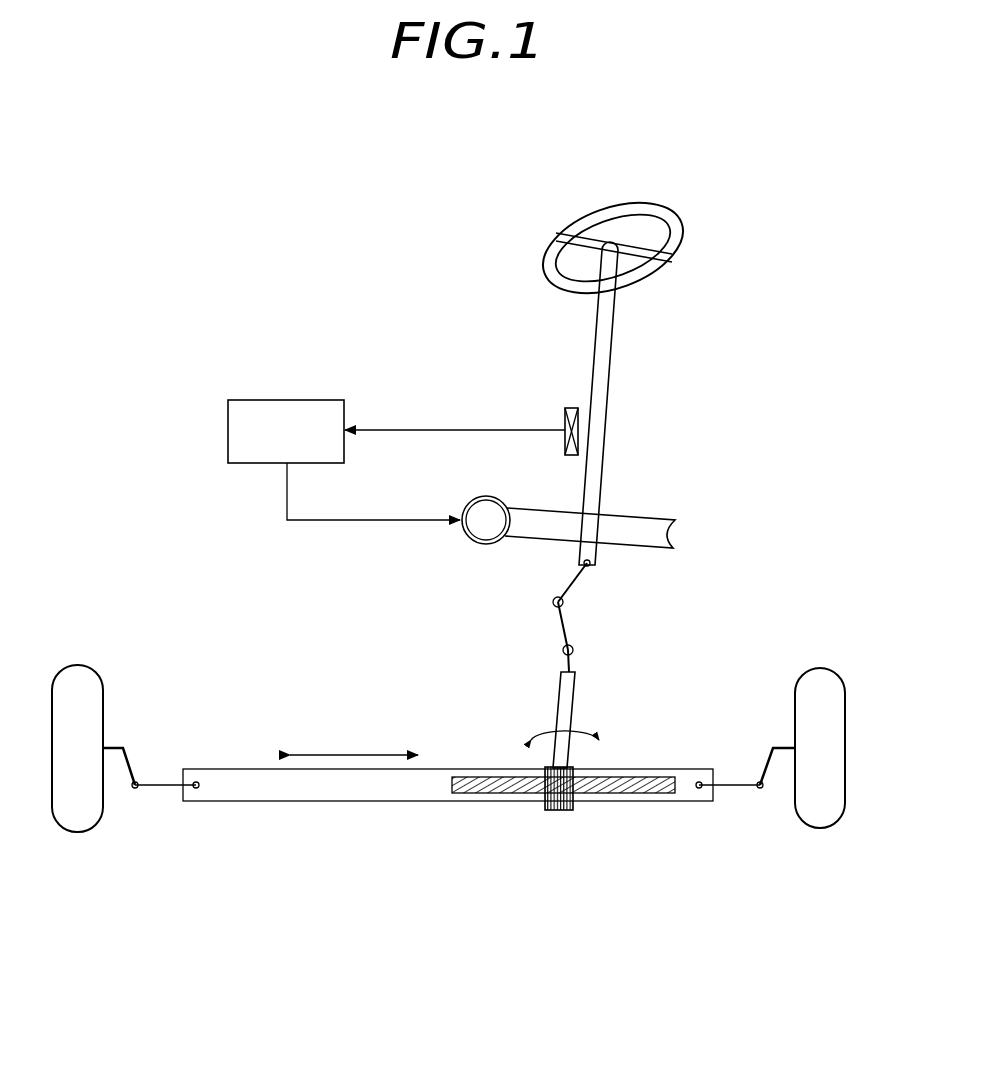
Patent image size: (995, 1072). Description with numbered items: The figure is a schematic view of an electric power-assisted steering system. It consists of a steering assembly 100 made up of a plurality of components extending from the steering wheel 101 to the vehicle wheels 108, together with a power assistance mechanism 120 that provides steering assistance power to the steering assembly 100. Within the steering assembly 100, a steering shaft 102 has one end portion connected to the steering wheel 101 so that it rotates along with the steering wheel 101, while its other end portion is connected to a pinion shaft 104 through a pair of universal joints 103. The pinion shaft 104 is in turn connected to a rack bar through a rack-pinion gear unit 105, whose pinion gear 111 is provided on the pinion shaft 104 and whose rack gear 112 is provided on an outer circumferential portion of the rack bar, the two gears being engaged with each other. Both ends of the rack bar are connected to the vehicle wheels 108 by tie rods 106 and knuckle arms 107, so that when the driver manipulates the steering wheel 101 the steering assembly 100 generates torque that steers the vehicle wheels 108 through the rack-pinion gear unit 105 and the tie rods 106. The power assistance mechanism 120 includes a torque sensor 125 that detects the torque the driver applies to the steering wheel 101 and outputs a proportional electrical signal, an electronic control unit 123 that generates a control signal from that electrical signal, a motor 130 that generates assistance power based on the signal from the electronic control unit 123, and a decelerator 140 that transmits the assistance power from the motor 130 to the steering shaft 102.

The steering assembly 100 is at (380, 228).
The steering wheel 101 is at (547, 226).
The steering shaft 102 is at (612, 362).
The universal joints 103 is at (574, 585).
The pinion shaft 104 is at (555, 703).
The rack-pinion gear unit 105 is at (448, 842).
The tie rods 106 is at (741, 782).
The knuckle arms 107 is at (115, 746).
The vehicle wheels 108 is at (818, 675).
The pinion gear 111 is at (557, 812).
The rack gear 112 is at (607, 797).
The power assistance mechanism 120 is at (243, 380).
The electronic control unit 123 is at (325, 400).
The torque sensor 125 is at (563, 422).
The motor 130 is at (483, 528).
The decelerator 140 is at (603, 512).